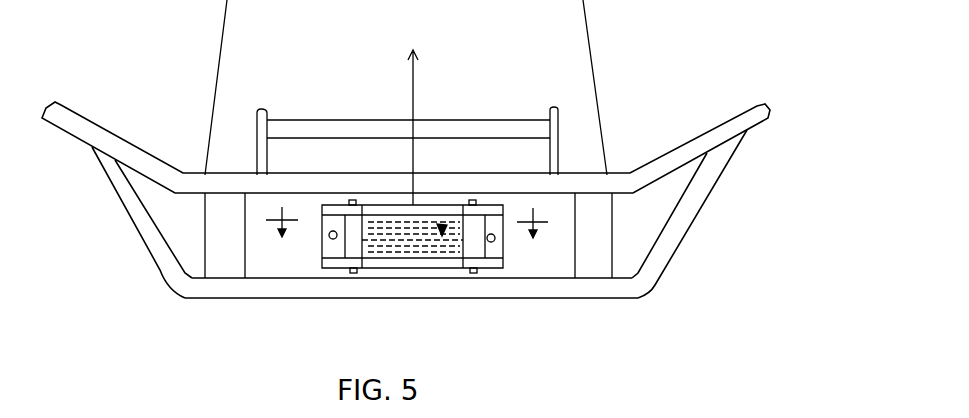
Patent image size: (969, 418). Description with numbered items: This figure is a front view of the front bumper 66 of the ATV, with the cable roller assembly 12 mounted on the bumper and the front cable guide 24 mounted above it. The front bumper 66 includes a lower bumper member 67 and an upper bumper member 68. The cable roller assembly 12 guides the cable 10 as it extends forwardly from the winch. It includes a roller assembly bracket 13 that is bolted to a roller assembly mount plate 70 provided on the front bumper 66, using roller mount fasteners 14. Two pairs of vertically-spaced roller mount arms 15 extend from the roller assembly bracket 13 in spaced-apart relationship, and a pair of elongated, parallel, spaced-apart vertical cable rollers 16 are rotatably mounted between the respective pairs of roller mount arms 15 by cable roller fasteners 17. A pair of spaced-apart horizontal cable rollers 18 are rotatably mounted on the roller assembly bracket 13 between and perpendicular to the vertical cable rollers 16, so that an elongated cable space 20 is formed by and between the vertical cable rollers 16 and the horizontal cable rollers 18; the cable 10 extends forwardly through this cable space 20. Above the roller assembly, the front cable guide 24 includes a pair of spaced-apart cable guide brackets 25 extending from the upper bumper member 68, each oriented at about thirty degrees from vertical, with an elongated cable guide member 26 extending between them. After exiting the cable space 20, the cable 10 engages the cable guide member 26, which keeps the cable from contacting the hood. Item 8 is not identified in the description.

The alignment mark 8 is at (407, 213).
The cable 10 is at (415, 72).
The cable roller assembly 12 is at (404, 287).
The roller assembly bracket 13 is at (429, 265).
The roller mount fasteners 14 is at (331, 235).
The roller mount arms 15 is at (338, 202).
The vertical cable rollers 16 is at (356, 245).
The cable roller fasteners 17 is at (352, 202).
The horizontal cable rollers 18 is at (384, 210).
The cable space 20 is at (443, 230).
The front cable guide 24 is at (282, 108).
The cable guide brackets 25 is at (257, 128).
The cable guide member 26 is at (372, 123).
The front bumper 66 is at (152, 276).
The lower bumper member 67 is at (208, 292).
The upper bumper member 68 is at (580, 188).
The roller assembly mount plate 70 is at (562, 224).